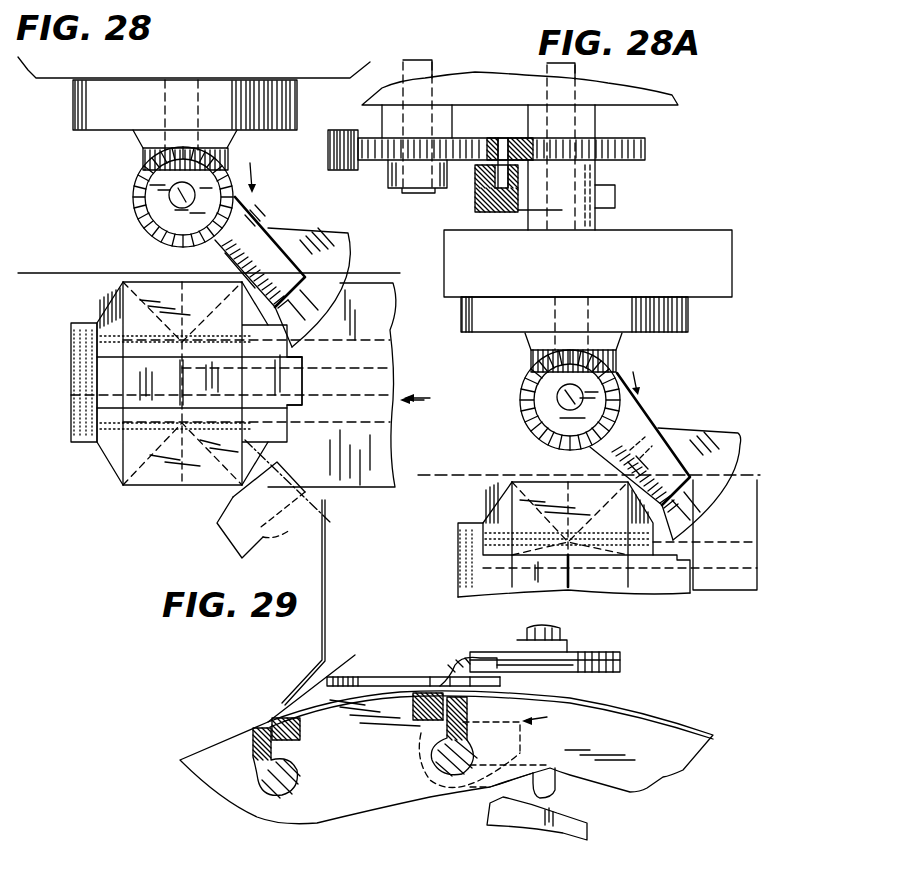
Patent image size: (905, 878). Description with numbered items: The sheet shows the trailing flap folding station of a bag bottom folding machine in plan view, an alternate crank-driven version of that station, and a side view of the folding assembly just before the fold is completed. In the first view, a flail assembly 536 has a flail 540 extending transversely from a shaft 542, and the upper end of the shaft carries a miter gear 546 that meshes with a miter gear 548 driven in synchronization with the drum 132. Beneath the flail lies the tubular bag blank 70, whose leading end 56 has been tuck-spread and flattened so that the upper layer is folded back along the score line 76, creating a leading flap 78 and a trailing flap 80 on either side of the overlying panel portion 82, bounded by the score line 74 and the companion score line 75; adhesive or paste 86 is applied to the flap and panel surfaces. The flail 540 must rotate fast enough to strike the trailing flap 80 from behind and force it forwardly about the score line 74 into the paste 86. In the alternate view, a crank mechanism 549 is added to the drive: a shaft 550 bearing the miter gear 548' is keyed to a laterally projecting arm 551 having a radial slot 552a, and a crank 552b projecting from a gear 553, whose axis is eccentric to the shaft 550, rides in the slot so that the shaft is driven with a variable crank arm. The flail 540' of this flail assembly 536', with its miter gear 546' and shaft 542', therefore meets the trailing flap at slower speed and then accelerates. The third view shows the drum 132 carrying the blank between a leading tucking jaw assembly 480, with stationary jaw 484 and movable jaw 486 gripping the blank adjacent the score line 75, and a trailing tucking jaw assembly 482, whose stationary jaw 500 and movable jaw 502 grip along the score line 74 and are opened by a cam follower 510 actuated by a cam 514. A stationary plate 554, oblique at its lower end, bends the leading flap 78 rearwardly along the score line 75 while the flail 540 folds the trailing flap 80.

In FIG. 28, the flail assembly 536 is at (194, 94).
In FIG. 29, the flail assembly 536 is at (548, 634).
In FIG. 28, the miter gear 548 is at (222, 154).
In FIG. 28, the miter gear 546 is at (163, 197).
In FIG. 28, the shaft 542 is at (137, 192).
In FIG. 29, the shaft 542 is at (535, 615).
In FIG. 28, the flail 540 is at (307, 272).
In FIG. 29, the flail 540 is at (413, 660).
In FIG. 28, the panel portion 82 is at (150, 285).
In FIG. 28, the leading end 56 is at (72, 330).
In FIG. 28, the score line 76 is at (185, 374).
In FIG. 28, the leading flap 78 is at (80, 376).
In FIG. 29, the leading flap 78 is at (352, 657).
In FIG. 28, the trailing flap 80 is at (304, 384).
In FIG. 29, the trailing flap 80 is at (340, 700).
In FIG. 28, the adhesive or paste 86 is at (86, 416).
In FIG. 28, the score line 75 is at (125, 452).
In FIG. 28, the tubular bag blank 70 is at (385, 312).
In FIG. 28A, the tubular bag blank 70 is at (589, 536).
In FIG. 29, the tubular bag blank 70 is at (637, 714).
In FIG. 28, the score line 74 is at (228, 463).
In FIG. 28A, the shaft 550 is at (590, 261).
In FIG. 28A, the gear 553 is at (645, 151).
In FIG. 28A, the crank mechanism 549 is at (430, 207).
In FIG. 28A, the radial slot 552a is at (523, 190).
In FIG. 28A, the crank 552b is at (482, 176).
In FIG. 28A, the arm 551 is at (488, 205).
In FIG. 28A, the miter gear 548' is at (574, 334).
In FIG. 28A, the miter gear 546' is at (558, 406).
In FIG. 28A, the shaft 542' is at (529, 405).
In FIG. 28A, the flail 540' is at (666, 456).
In FIG. 28A, the flail assembly 536' is at (699, 394).
In FIG. 29, the stationary plate 554 is at (326, 578).
In FIG. 29, the drum 132 is at (210, 793).
In FIG. 29, the leading tucking jaw assembly 480 is at (261, 720).
In FIG. 29, the movable jaw 486 is at (262, 760).
In FIG. 29, the stationary jaw 484 is at (295, 743).
In FIG. 29, the stationary jaw 500 is at (416, 708).
In FIG. 29, the trailing tucking jaw assembly 482 is at (419, 745).
In FIG. 29, the movable jaw 502 is at (513, 757).
In FIG. 29, the cam follower 510 is at (556, 788).
In FIG. 29, the cam 514 is at (585, 832).